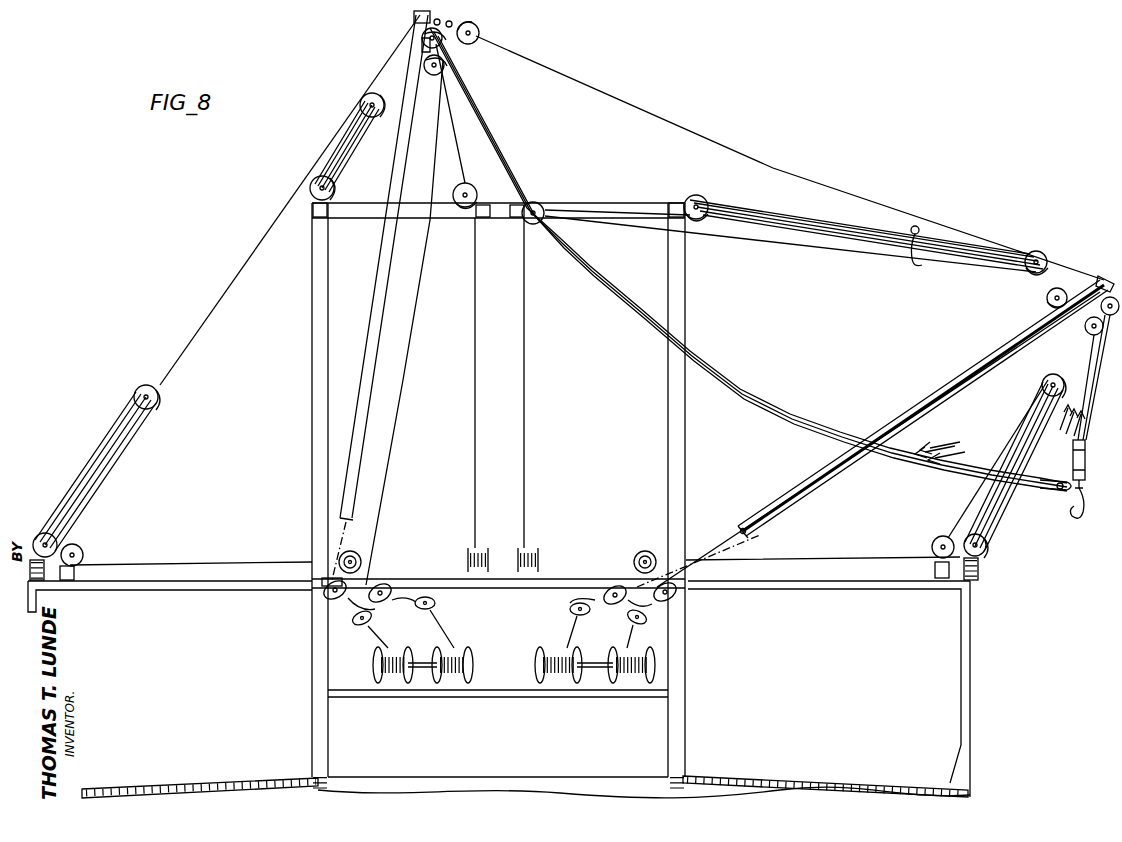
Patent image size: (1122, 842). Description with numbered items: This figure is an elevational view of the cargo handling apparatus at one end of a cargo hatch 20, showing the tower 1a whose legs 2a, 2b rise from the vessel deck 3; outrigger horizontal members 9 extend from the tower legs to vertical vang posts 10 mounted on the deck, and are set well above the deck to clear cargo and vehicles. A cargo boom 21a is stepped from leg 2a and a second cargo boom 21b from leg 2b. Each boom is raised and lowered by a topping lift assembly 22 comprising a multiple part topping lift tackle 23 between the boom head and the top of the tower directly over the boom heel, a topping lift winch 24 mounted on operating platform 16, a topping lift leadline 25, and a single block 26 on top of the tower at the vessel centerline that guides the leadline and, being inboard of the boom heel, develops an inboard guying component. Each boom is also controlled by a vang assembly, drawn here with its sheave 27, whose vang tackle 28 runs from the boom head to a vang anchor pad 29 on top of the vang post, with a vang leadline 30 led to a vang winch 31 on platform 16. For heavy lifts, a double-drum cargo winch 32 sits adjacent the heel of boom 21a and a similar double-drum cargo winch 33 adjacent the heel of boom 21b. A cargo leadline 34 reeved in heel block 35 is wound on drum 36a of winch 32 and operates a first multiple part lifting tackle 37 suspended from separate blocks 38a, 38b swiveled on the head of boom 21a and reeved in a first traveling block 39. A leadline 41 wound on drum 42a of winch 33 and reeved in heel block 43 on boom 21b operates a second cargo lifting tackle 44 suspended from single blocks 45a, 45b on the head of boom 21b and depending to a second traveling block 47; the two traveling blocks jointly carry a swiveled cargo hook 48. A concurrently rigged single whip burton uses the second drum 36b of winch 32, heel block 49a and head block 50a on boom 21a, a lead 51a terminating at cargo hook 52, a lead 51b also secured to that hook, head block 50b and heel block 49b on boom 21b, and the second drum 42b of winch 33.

The tower 1a is at (280, 418).
The leg 2a is at (312, 314).
The leg 2b is at (683, 272).
The vessel deck 3 is at (200, 782).
The horizontal member 9 is at (840, 583).
The vang post 10 is at (970, 680).
The operating platform 16 is at (503, 575).
The cargo hatch 20 is at (458, 777).
The cargo boom 21a is at (372, 322).
The cargo boom 21b is at (958, 392).
The topping lift assembly 22 is at (345, 143).
The topping lift tackle 23 is at (312, 182).
The topping lift winch 24 is at (467, 556).
The topping lift leadline 25 is at (475, 290).
The single block 26 is at (487, 180).
The sheave 27 is at (130, 405).
The vang tackle 28 is at (108, 465).
The vang anchor pad 29 is at (38, 560).
The vang leadline 30 is at (210, 563).
The vang winch 31 is at (360, 552).
The double-drum cargo winch 32 is at (421, 688).
The double-drum cargo winch 33 is at (623, 672).
The cargo leadline 34 is at (396, 318).
The heel block 35 is at (330, 598).
The drum 36a is at (373, 665).
The drum 36b is at (473, 665).
The lifting tackle 37 is at (728, 368).
The block 38a is at (422, 37).
The block 38b is at (424, 65).
The traveling block 39 is at (1036, 478).
The leadline 41 is at (825, 478).
The drum 42a is at (655, 665).
The drum 42b is at (539, 658).
The heel block 43 is at (680, 598).
The cargo lifting tackle 44 is at (1092, 368).
The single block 45a is at (1084, 328).
The single block 45b is at (1107, 284).
The traveling block 47 is at (1086, 458).
The cargo hook 48 is at (1084, 508).
The heel block 49a is at (384, 585).
The heel block 49b is at (614, 587).
The head block 50a is at (480, 32).
The head block 50b is at (1046, 300).
The lead 51a is at (690, 120).
The lead 51b is at (800, 488).
The cargo hook 52 is at (910, 262).